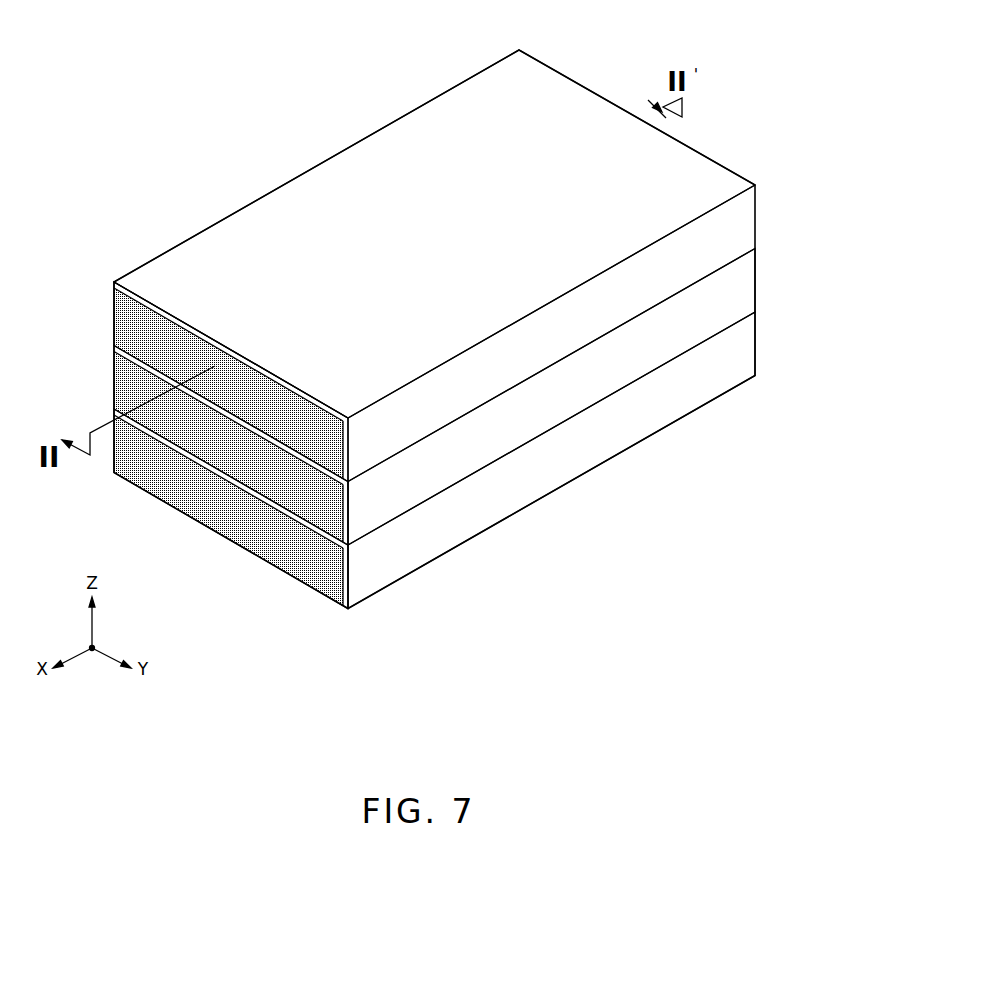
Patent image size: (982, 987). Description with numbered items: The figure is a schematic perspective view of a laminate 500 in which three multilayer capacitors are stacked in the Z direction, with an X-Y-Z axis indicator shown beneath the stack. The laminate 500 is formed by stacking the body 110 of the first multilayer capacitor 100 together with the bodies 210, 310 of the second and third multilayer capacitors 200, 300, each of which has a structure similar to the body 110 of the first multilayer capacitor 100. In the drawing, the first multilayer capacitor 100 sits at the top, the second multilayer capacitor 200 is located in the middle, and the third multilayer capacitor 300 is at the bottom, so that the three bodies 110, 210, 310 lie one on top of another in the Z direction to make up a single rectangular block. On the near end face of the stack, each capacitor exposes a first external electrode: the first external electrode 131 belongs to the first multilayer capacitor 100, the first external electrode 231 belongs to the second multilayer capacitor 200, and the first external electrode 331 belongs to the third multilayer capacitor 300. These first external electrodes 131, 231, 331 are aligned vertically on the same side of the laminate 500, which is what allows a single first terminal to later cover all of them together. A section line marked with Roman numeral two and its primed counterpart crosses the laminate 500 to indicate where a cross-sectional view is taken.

The laminate 500 is at (295, 29).
The first multilayer capacitor 100 is at (766, 199).
The second multilayer capacitor 200 is at (766, 282).
The third multilayer capacitor 300 is at (766, 360).
The body 110 is at (545, 332).
The body 210 is at (510, 432).
The body 310 is at (473, 520).
The first external electrode 131 is at (120, 330).
The first external electrode 231 is at (122, 385).
The first external electrode 331 is at (145, 480).